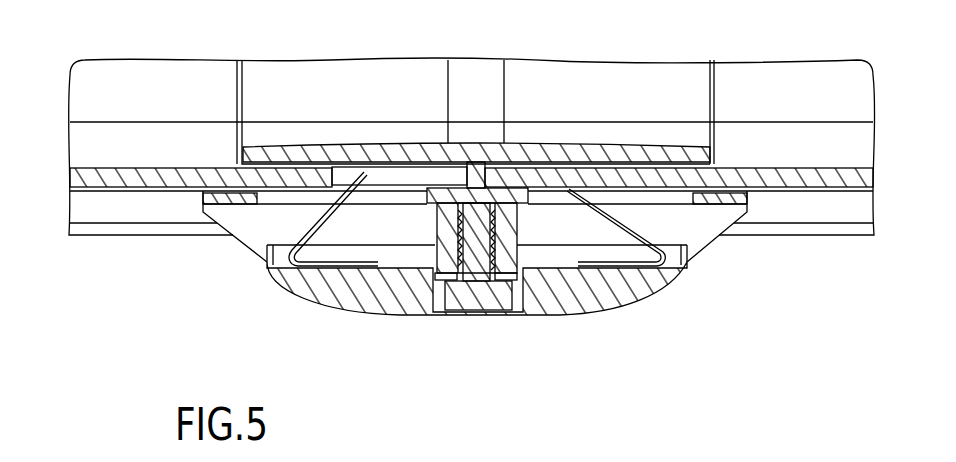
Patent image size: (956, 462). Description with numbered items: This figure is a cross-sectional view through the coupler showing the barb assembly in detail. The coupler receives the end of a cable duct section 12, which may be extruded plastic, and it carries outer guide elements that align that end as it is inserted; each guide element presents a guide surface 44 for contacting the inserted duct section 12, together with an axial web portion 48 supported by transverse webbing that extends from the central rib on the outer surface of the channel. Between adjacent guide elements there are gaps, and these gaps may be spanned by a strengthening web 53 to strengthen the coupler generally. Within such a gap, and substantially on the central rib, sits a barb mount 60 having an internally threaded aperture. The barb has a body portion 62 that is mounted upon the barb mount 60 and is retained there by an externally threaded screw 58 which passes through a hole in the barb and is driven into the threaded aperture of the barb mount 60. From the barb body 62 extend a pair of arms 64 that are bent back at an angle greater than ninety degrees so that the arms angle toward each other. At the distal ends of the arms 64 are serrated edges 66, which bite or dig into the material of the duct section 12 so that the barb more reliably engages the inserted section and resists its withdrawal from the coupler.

The duct section 12 is at (152, 186).
The guide surface 44 is at (557, 160).
The axial web portion 48 is at (703, 217).
The strengthening web 53 is at (230, 198).
The externally threaded screw 58 is at (475, 300).
The barb mount 60 is at (522, 197).
The barb body 62 is at (318, 268).
The arms 64 is at (300, 240).
The serrated edges 66 is at (362, 172).